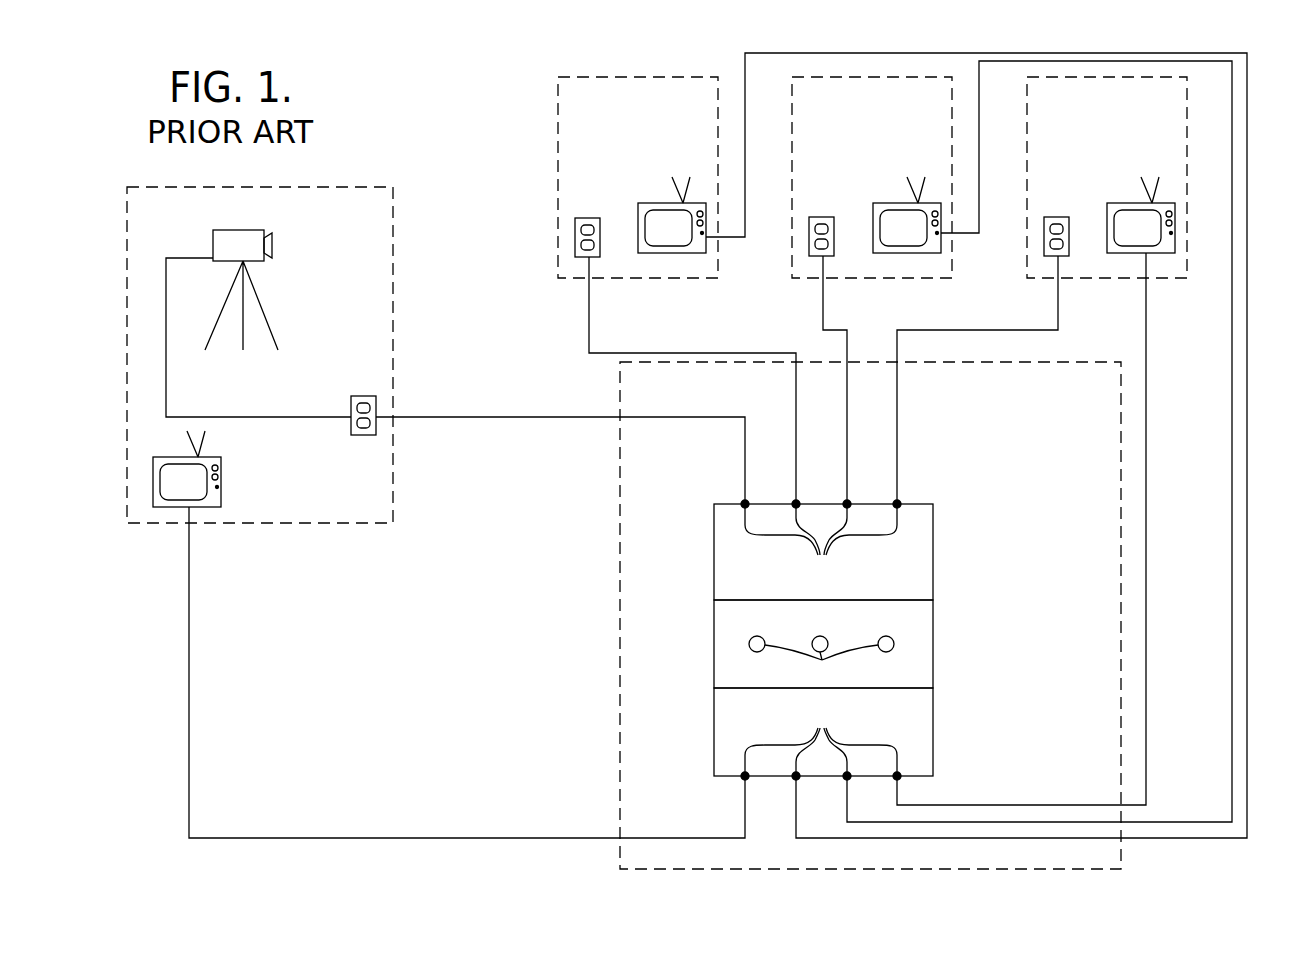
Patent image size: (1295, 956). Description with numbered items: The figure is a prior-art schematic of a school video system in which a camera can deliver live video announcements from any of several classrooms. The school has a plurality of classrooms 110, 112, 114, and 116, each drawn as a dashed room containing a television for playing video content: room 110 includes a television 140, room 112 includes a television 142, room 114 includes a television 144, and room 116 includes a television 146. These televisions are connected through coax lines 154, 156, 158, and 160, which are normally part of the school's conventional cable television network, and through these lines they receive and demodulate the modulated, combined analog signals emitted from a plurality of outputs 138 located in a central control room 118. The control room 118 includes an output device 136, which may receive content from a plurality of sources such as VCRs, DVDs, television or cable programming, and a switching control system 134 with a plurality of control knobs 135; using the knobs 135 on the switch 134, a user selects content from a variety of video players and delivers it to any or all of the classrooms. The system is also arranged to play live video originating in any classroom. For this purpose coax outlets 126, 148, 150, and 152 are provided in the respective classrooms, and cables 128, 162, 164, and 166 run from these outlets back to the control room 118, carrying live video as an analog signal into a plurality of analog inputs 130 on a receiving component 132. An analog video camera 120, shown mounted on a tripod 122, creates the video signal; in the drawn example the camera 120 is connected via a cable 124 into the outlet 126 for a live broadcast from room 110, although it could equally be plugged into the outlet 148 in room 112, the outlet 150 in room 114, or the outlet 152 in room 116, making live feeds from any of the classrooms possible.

The classroom 110 is at (350, 187).
The classroom 112 is at (636, 77).
The classroom 114 is at (790, 162).
The classroom 116 is at (1027, 170).
The central control room 118 is at (620, 628).
The analog video camera 120 is at (243, 230).
The tripod 122 is at (263, 261).
The cable 124 is at (296, 417).
The coax outlet 126 is at (362, 436).
The cable 128 is at (478, 416).
The analog inputs 130 is at (821, 540).
The receiving component 132 is at (753, 597).
The switching control system 134 is at (753, 684).
The control knobs 135 is at (821, 661).
The output device 136 is at (753, 713).
The outputs 138 is at (821, 742).
The television 140 is at (222, 489).
The television 142 is at (675, 253).
The television 144 is at (905, 252).
The television 146 is at (1175, 226).
The coax outlet 148 is at (588, 218).
The coax outlet 150 is at (822, 217).
The coax outlet 152 is at (1050, 217).
The coax line 154 is at (296, 838).
The coax line 156 is at (1247, 330).
The coax line 158 is at (1232, 377).
The coax line 160 is at (1146, 455).
The cable 162 is at (589, 315).
The cable 164 is at (823, 307).
The cable 166 is at (1058, 298).